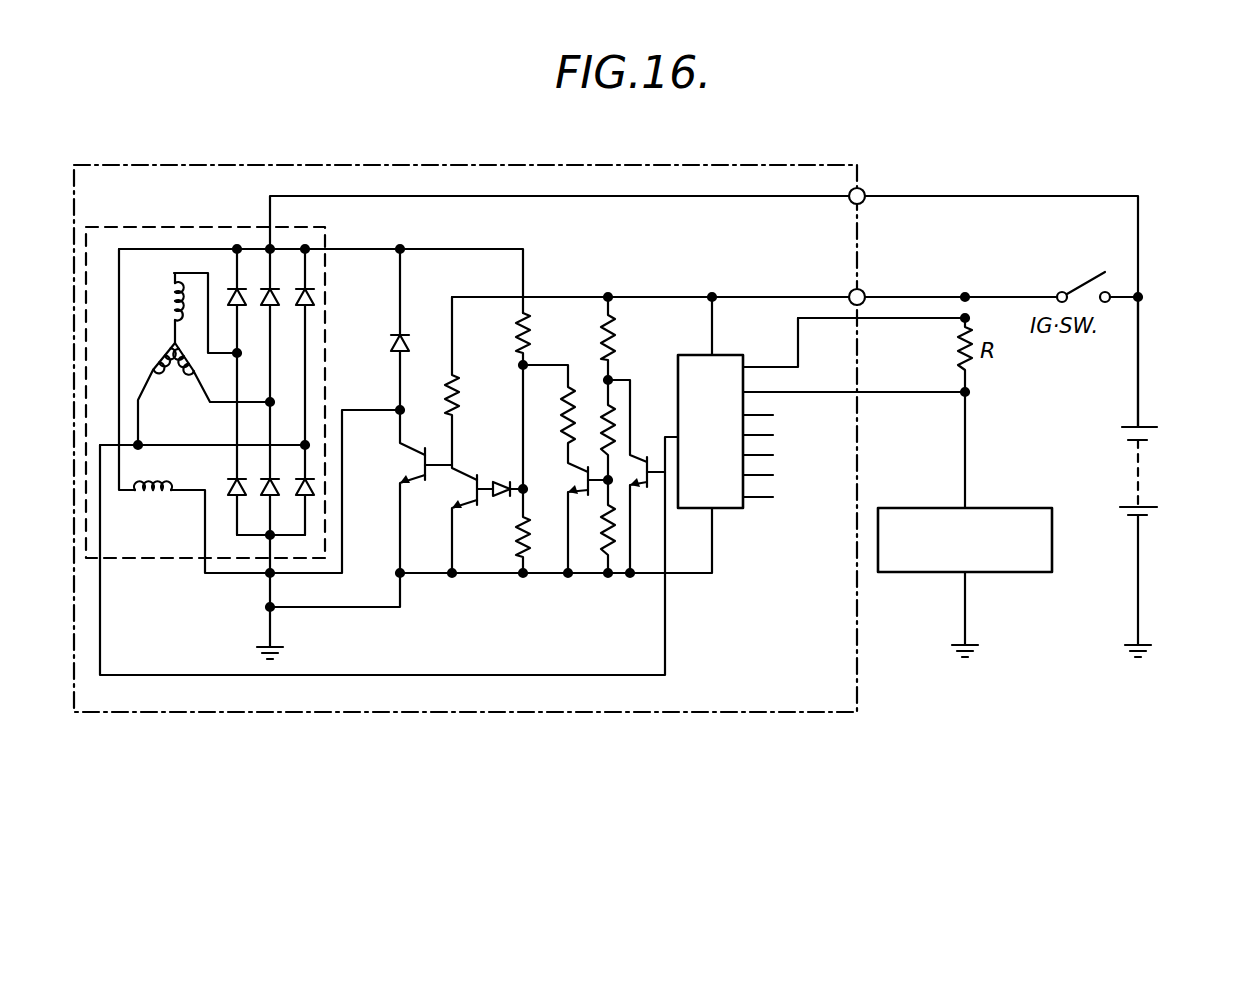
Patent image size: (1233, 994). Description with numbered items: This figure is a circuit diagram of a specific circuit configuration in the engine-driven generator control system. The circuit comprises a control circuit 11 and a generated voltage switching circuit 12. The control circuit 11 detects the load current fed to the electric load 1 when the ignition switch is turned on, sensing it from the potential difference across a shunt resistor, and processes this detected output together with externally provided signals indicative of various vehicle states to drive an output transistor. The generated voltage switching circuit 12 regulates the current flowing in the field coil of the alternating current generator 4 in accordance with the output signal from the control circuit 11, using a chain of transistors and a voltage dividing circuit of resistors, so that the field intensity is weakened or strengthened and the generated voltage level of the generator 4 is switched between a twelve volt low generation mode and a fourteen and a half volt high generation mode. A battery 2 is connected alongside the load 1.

The electric load 1 is at (1007, 508).
The battery 2 is at (1142, 473).
The alternating current generator 4 is at (177, 226).
The control circuit 11 is at (718, 355).
The generated voltage switching circuit 12 is at (482, 598).